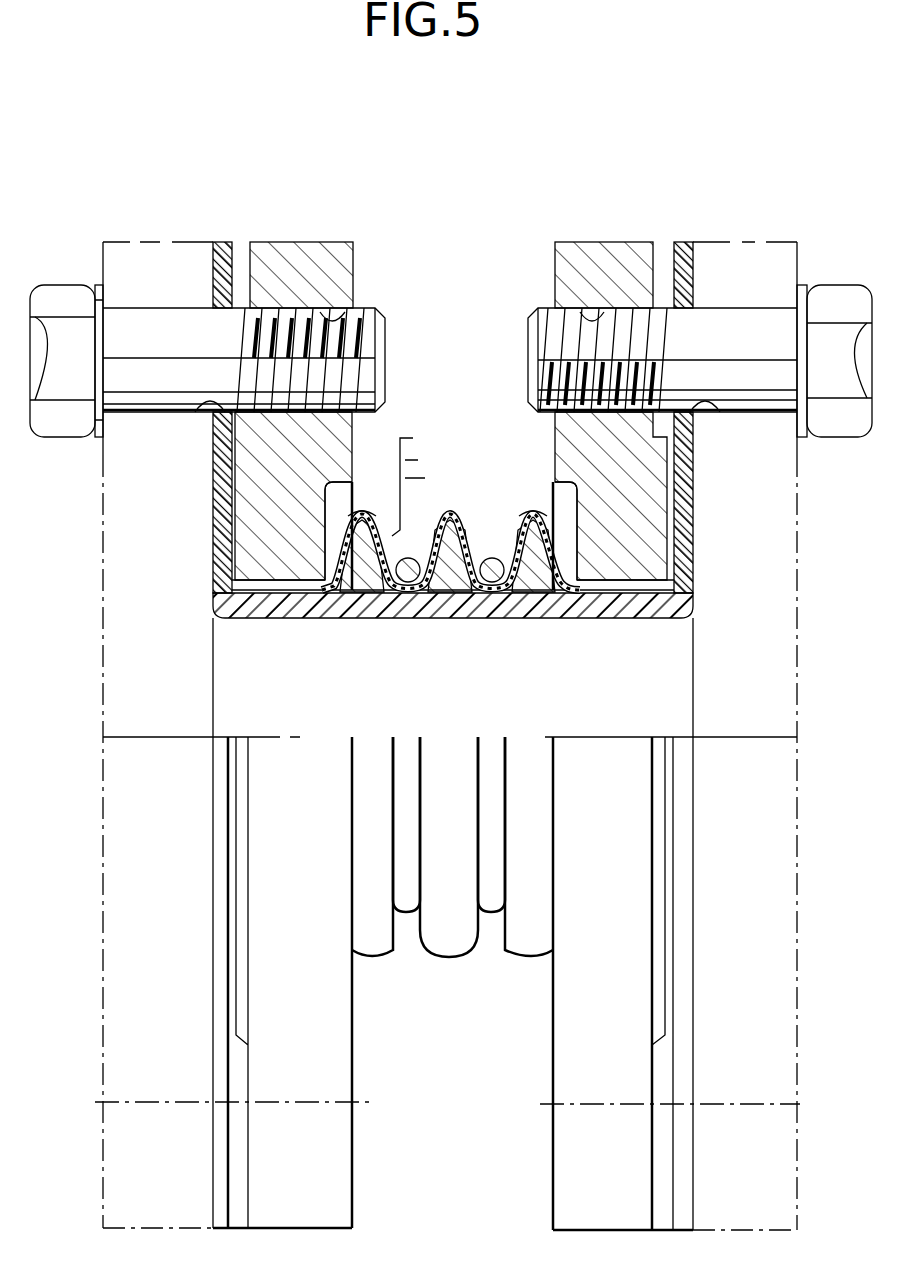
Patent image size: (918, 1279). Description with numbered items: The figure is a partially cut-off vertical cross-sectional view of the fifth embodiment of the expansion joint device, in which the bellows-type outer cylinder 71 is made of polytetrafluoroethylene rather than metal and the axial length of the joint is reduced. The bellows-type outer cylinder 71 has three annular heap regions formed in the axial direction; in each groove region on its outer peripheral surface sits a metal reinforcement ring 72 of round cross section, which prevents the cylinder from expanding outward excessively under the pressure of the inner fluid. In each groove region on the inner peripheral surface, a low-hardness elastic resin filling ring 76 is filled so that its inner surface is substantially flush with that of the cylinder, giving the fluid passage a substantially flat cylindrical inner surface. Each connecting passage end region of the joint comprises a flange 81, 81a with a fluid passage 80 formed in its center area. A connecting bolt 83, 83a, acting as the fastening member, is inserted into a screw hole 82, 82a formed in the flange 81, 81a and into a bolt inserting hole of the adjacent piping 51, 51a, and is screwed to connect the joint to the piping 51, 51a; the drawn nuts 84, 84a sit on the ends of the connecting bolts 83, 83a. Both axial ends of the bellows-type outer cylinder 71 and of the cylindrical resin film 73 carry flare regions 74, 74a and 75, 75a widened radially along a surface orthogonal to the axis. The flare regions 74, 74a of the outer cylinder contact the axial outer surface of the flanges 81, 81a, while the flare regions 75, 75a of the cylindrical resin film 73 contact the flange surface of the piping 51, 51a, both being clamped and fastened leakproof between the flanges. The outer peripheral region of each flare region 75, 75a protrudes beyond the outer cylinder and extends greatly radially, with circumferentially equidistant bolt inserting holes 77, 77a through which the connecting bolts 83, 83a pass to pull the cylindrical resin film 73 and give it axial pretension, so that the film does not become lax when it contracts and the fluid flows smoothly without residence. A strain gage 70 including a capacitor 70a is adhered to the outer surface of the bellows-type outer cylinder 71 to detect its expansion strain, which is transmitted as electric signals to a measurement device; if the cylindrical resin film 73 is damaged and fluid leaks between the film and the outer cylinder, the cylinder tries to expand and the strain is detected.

The piping 51a is at (138, 242).
The piping 51 is at (745, 242).
The flare region of cylindrical resin film 75a is at (218, 262).
The flare region of cylindrical resin film 75 is at (683, 265).
The flare region of bellows-type outer cylinder 74a is at (230, 520).
The flare region of bellows-type outer cylinder 74 is at (690, 500).
The cylindrical resin film 73 is at (585, 605).
The fluid passage 80 is at (645, 590).
The flange 81a is at (290, 258).
The flange 81 is at (565, 258).
The screw hole 82a is at (350, 318).
The screw hole 82 is at (600, 320).
The connecting bolt 83a is at (385, 360).
The connecting bolt 83 is at (560, 330).
The left nut 84a is at (78, 292).
The right nut 84 is at (835, 295).
The bolt inserting hole 77a is at (205, 408).
The bolt inserting hole 77 is at (700, 405).
The strain gage 70 is at (392, 540).
The capacitor 70a is at (420, 460).
The bellows-type outer cylinder 71 is at (450, 525).
The metal reinforcement ring 72 is at (492, 558).
The elastic resin filling ring 76 is at (370, 590).